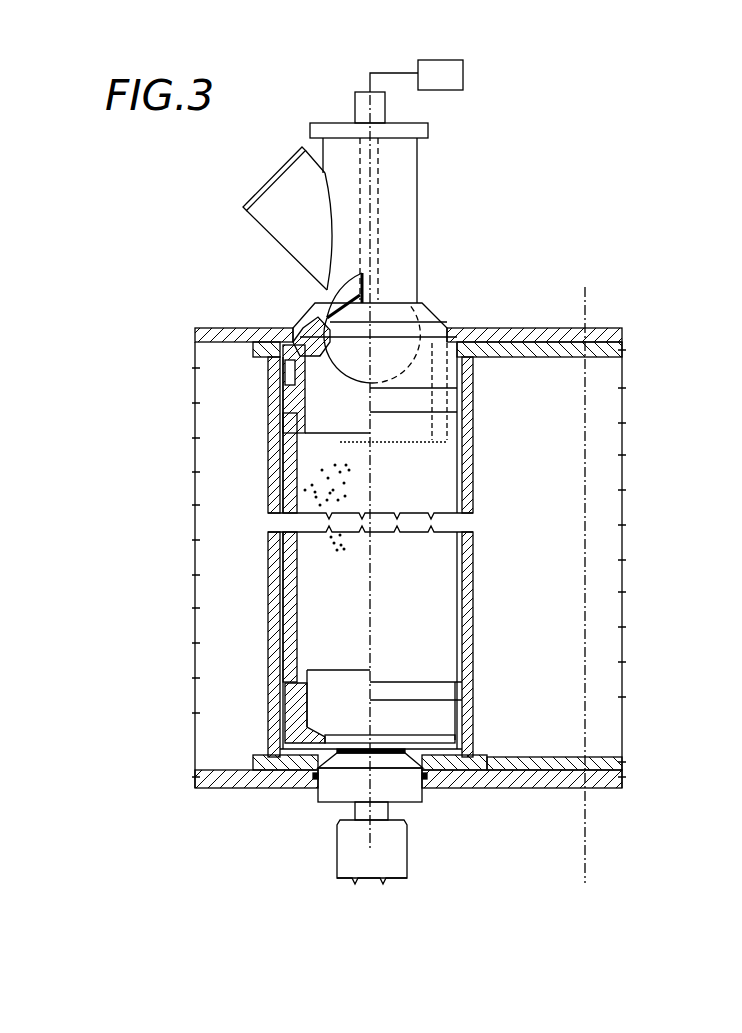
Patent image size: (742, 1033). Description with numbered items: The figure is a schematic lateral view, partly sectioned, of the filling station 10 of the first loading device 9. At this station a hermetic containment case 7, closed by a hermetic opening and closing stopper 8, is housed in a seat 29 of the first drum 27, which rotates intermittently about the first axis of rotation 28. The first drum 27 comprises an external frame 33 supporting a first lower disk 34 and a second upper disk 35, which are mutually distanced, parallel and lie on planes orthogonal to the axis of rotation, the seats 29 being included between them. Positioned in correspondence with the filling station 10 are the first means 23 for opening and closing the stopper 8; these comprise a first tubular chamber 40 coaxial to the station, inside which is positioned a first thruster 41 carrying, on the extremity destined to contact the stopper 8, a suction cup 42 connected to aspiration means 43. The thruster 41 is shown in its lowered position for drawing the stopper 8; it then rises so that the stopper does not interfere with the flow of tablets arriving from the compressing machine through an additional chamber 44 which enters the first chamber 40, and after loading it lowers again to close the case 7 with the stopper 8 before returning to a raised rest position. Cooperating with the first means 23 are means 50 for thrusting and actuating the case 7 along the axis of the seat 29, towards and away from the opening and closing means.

The hermetic containment case 7 is at (287, 458).
The stopper 8 is at (353, 325).
The first loading device 9 is at (492, 278).
The filling station 10 is at (257, 265).
The first means for opening and closing the stopper 23 is at (383, 283).
The first drum 27 is at (260, 693).
The first axis of rotation 28 is at (587, 855).
The seat 29 is at (480, 555).
The external frame 33 is at (613, 797).
The first lower disk 34 is at (602, 760).
The second upper disk 35 is at (607, 352).
The first tubular chamber 40 is at (405, 162).
The first thruster 41 is at (360, 183).
The suction cup 42 is at (323, 293).
The aspiration means 43 is at (443, 74).
The additional chamber 44 is at (283, 205).
The means for thrusting and actuating the case 50 is at (313, 812).